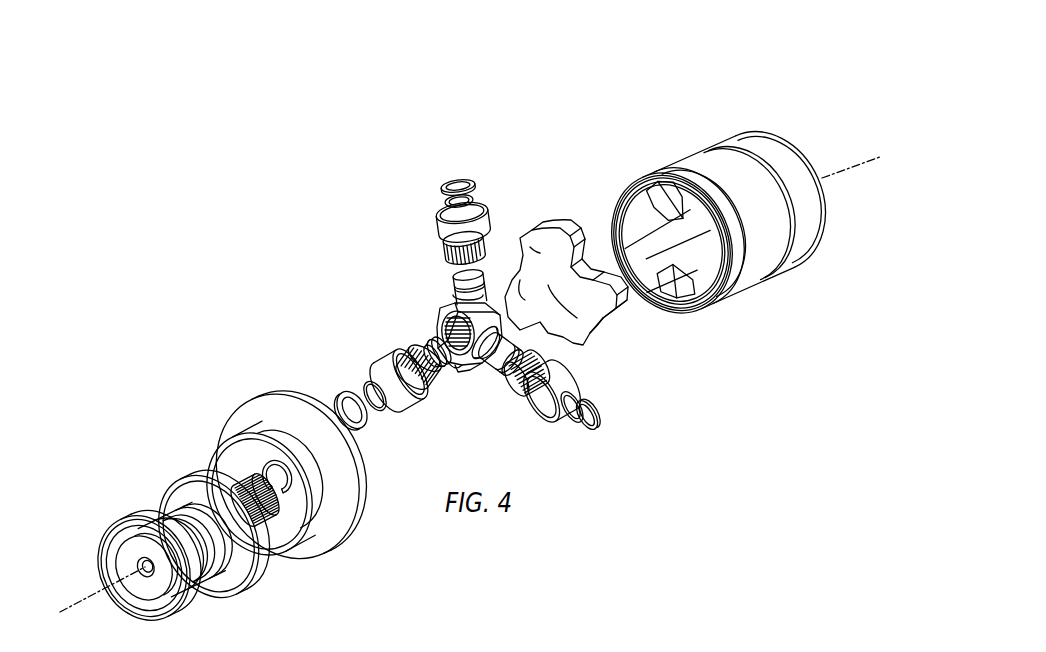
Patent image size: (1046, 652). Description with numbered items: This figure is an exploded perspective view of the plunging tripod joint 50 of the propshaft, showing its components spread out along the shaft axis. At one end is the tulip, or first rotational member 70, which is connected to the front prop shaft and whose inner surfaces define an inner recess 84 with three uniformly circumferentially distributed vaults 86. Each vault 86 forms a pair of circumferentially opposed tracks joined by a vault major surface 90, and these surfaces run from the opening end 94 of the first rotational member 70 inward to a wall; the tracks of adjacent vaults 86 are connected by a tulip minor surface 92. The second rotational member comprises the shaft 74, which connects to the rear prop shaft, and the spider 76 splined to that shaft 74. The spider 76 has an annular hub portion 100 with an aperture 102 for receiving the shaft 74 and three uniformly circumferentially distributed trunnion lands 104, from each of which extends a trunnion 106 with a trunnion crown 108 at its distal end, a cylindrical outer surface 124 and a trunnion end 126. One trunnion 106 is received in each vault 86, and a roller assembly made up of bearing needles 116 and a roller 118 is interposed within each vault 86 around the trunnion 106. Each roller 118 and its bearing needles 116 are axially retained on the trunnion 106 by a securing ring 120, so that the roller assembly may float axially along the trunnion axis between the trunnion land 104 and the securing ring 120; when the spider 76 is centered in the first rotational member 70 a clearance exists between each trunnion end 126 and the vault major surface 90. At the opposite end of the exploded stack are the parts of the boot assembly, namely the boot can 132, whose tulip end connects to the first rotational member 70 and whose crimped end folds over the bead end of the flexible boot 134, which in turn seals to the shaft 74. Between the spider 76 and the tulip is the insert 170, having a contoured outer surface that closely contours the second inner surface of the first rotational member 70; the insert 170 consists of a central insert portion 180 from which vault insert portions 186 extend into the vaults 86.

The joint 50 is at (354, 153).
The first rotational member 70 is at (739, 124).
The shaft 74 is at (247, 483).
The spider 76 is at (434, 312).
The inner recess 84 is at (664, 216).
The vault 86 is at (651, 263).
The vault major surface 90 is at (678, 212).
The tulip minor surface 92 is at (678, 255).
The opening end 94 is at (682, 308).
The hub portion 100 is at (450, 360).
The aperture 102 is at (442, 328).
The trunnion land 104 is at (458, 370).
The trunnion 106 is at (443, 289).
The trunnion crown 108 is at (462, 265).
The bearing needles 116 is at (446, 230).
The roller 118 is at (445, 207).
The securing ring 120 is at (462, 180).
The cylindrical outer surface 124 is at (462, 295).
The trunnion end 126 is at (503, 388).
The boot can 132 is at (268, 405).
The flexible boot 134 is at (193, 473).
The insert 170 is at (556, 230).
The central insert portion 180 is at (607, 316).
The vault insert portion 186 is at (522, 262).